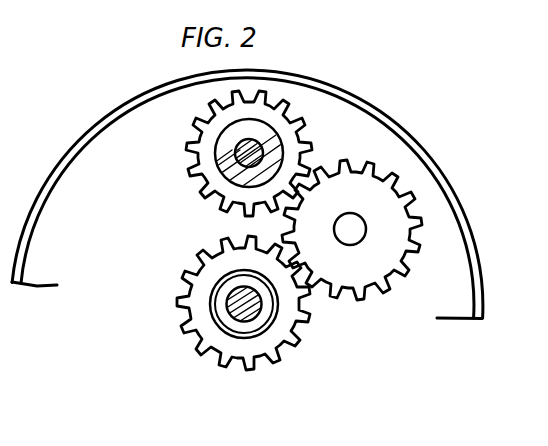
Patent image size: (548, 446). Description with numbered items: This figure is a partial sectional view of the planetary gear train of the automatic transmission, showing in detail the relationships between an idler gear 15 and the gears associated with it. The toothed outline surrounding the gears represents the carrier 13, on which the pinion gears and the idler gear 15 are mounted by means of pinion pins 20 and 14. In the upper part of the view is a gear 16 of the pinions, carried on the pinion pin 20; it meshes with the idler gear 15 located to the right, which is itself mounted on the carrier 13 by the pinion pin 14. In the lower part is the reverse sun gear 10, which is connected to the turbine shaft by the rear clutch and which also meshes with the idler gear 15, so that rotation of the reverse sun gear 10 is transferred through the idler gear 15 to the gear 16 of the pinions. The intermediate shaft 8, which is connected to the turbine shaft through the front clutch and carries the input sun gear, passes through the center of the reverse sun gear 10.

The carrier 13 is at (108, 118).
The gear of the pinions 16 is at (199, 184).
The pinion pin 20 is at (216, 154).
The idler gear 15 is at (369, 283).
The pinion pin 14 is at (357, 229).
The reverse sun gear 10 is at (303, 328).
The intermediate shaft 8 is at (250, 315).